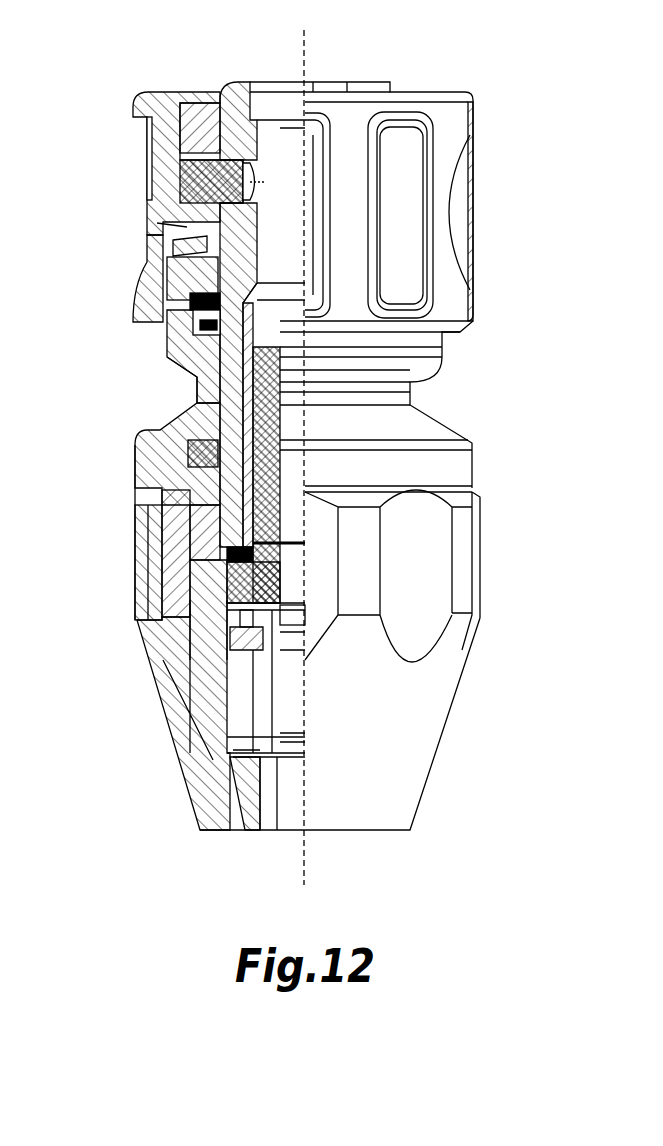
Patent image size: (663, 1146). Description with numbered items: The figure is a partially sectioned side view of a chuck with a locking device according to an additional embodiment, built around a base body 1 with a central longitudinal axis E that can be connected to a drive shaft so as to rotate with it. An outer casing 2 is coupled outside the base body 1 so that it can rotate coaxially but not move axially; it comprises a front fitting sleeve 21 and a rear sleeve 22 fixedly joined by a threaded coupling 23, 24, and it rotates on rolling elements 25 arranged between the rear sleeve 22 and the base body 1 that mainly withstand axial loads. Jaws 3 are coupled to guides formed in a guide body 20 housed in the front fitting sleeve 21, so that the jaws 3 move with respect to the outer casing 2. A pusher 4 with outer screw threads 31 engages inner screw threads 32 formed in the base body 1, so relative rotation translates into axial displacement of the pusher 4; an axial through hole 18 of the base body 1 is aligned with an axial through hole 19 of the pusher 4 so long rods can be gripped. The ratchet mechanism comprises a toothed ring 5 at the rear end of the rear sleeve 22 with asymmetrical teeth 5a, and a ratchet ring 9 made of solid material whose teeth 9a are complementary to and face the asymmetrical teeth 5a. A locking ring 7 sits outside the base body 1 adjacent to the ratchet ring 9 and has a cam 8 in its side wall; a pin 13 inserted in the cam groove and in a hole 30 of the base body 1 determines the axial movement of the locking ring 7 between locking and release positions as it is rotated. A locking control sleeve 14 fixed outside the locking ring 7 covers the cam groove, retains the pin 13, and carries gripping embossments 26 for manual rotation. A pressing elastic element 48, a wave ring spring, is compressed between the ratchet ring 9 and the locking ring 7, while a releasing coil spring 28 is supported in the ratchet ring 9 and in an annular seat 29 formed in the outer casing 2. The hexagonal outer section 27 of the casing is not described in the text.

The base body 1 is at (246, 80).
The outer casing 2 is at (56, 478).
The jaws 3 is at (265, 807).
The pusher 4 is at (200, 630).
The toothed ring 5 is at (168, 342).
The asymmetrical teeth 5a is at (190, 327).
The locking ring 7 is at (200, 117).
The cam 8 is at (140, 138).
The ratchet ring 9 is at (168, 275).
The teeth 9a is at (172, 298).
The pin 13 is at (178, 168).
The locking control sleeve 14 is at (185, 148).
The axial through hole 18 is at (292, 142).
The axial through hole 19 is at (296, 688).
The guide body 20 is at (210, 703).
The front fitting sleeve 21 is at (150, 525).
The rear sleeve 22 is at (152, 470).
The threaded coupling 23 is at (160, 560).
The threaded coupling 24 is at (200, 585).
The rolling elements 25 is at (196, 452).
The gripping embossments 26 is at (476, 183).
The hexagonal section 27 is at (482, 563).
The coil spring 28 is at (243, 331).
The annular seat 29 is at (200, 378).
The hole 30 is at (238, 148).
The outer screw threads 31 is at (340, 392).
The inner screw threads 32 is at (283, 458).
The pressing elastic element 48 is at (176, 245).
The central longitudinal axis E is at (310, 50).